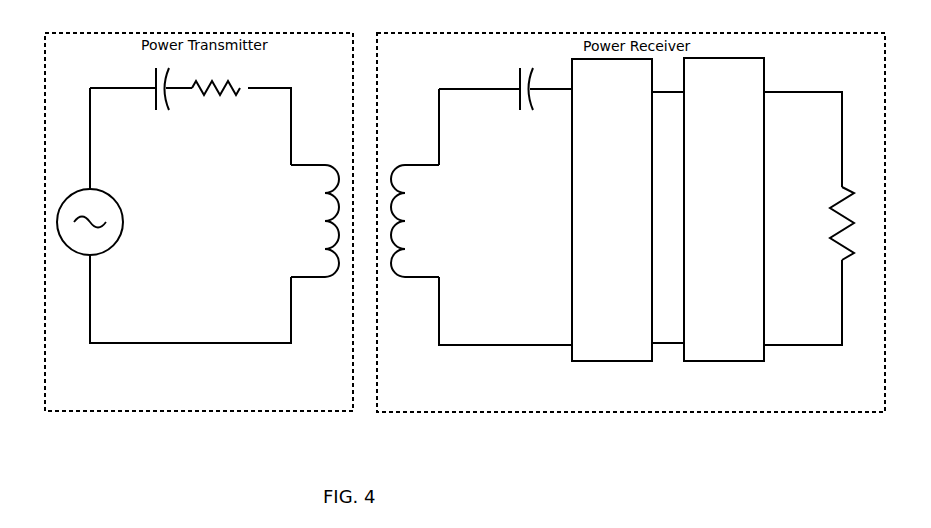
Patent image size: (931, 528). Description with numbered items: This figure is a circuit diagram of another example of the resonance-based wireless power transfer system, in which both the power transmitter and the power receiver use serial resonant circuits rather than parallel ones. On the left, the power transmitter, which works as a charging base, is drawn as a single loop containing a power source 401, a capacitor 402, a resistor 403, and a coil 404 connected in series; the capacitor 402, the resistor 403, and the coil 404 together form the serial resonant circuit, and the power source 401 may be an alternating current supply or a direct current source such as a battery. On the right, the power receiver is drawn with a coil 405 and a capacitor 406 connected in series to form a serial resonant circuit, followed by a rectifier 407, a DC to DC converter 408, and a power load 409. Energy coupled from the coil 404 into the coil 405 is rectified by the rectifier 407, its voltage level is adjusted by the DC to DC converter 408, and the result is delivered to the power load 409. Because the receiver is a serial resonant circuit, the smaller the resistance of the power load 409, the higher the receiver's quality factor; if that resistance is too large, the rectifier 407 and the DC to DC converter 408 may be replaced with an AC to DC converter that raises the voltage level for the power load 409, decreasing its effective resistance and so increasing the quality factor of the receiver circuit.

The AC power source 401 is at (90, 222).
The transmitter capacitor 402 is at (153, 98).
The transmitter resistor 403 is at (216, 100).
The transmitter coil 404 is at (314, 221).
The receiver coil 405 is at (415, 221).
The receiver capacitor 406 is at (521, 100).
The rectifier 407 is at (612, 210).
The DC to DC converter 408 is at (724, 209).
The power load 409 is at (827, 223).